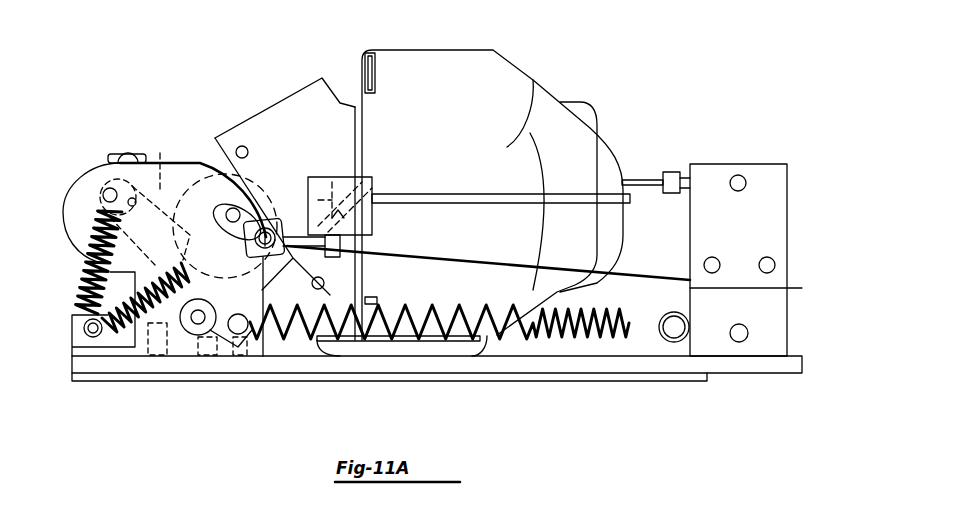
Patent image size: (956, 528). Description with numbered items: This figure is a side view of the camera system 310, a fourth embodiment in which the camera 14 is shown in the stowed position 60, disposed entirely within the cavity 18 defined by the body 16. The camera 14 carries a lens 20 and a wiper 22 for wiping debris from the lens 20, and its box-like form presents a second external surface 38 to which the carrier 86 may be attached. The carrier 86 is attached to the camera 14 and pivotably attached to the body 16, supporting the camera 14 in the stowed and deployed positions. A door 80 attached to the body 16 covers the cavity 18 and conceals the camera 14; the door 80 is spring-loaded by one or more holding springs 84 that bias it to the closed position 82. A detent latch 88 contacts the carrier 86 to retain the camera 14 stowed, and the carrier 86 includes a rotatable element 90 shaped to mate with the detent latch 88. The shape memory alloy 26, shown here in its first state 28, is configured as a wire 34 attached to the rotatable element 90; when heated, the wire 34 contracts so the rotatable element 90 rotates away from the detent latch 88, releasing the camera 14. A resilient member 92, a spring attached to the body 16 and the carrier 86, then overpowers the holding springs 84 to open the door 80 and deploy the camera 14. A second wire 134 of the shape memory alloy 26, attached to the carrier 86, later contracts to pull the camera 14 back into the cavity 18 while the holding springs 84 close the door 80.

The camera system 310 is at (142, 45).
The camera 14 is at (470, 178).
The body 16 is at (803, 364).
The cavity 18 is at (633, 302).
The lens 20 is at (621, 158).
The wiper 22 is at (627, 205).
The shape memory alloy 26 is at (493, 198).
The wire 34 is at (643, 178).
The second wire 134 is at (437, 258).
The first state 28 is at (393, 243).
The second external surface 38 is at (460, 116).
The stowed position 60 is at (679, 87).
The door 80 is at (637, 382).
The closed position 82 is at (597, 415).
The holding springs 84 is at (90, 293).
The carrier 86 is at (268, 108).
The detent latch 88 is at (160, 160).
The rotatable element 90 is at (243, 178).
The resilient member 92 is at (415, 303).